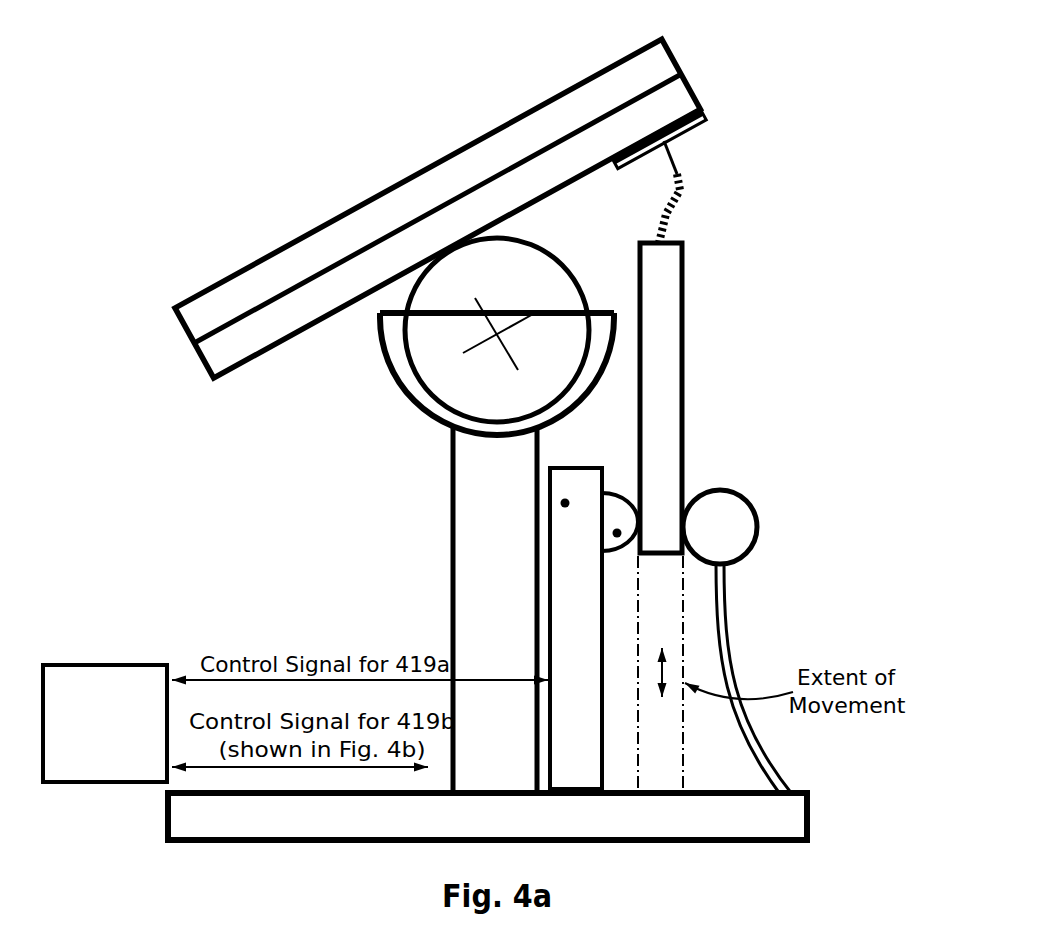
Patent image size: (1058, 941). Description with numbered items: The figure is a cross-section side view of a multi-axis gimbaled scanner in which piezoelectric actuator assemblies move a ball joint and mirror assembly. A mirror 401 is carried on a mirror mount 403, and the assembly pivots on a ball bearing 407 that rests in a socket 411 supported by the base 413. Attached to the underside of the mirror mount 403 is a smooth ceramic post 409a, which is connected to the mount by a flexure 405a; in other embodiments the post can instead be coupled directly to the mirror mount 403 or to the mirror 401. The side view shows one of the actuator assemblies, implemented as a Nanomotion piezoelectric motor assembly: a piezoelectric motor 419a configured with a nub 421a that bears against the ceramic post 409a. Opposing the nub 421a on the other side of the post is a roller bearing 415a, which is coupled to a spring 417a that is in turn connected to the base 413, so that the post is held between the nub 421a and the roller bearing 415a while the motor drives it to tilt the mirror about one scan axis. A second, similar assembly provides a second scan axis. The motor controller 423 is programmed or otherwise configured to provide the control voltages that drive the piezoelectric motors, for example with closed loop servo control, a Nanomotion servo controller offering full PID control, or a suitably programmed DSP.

The mirror 401 is at (407, 177).
The mirror mount 403 is at (708, 100).
The flexure 405a is at (693, 187).
The ball bearing 407 is at (563, 258).
The ceramic post 409a is at (683, 303).
The socket 411 is at (613, 367).
The base 413 is at (813, 817).
The roller bearing 415a is at (758, 529).
The spring 417a is at (735, 630).
The piezoelectric motor 419a is at (565, 503).
The nub 421a is at (617, 533).
The motor controller 423 is at (105, 723).